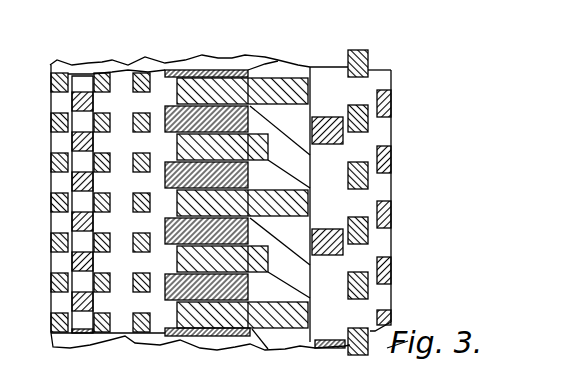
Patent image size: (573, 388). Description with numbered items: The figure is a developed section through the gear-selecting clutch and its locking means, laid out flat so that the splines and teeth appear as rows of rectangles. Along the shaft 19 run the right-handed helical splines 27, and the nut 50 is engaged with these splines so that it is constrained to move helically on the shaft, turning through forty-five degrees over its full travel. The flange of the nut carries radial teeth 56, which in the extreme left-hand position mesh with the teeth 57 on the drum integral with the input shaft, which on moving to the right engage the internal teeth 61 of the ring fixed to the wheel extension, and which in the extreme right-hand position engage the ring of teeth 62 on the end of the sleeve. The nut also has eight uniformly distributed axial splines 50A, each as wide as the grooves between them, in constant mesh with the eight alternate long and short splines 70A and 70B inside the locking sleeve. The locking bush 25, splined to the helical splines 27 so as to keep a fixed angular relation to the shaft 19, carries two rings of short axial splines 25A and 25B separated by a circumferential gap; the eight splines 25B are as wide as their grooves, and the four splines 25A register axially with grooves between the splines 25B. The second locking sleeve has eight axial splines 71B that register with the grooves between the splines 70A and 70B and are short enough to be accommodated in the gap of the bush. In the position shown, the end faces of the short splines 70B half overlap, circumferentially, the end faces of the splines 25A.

The shaft 19 is at (239, 348).
The locking bush 25 is at (327, 73).
The short axial splines 25A is at (345, 255).
The short axial splines 25B is at (392, 97).
The right-handed helical splines 27 is at (224, 68).
The nut 50 is at (158, 337).
The axial splines 50A is at (243, 181).
The radial teeth 56 is at (76, 218).
The teeth 57 is at (51, 132).
The internal teeth 61 is at (104, 75).
The ring of teeth 62 is at (141, 73).
The long splines 70A is at (276, 84).
The short splines 70B is at (268, 137).
The axial splines 71B is at (358, 104).